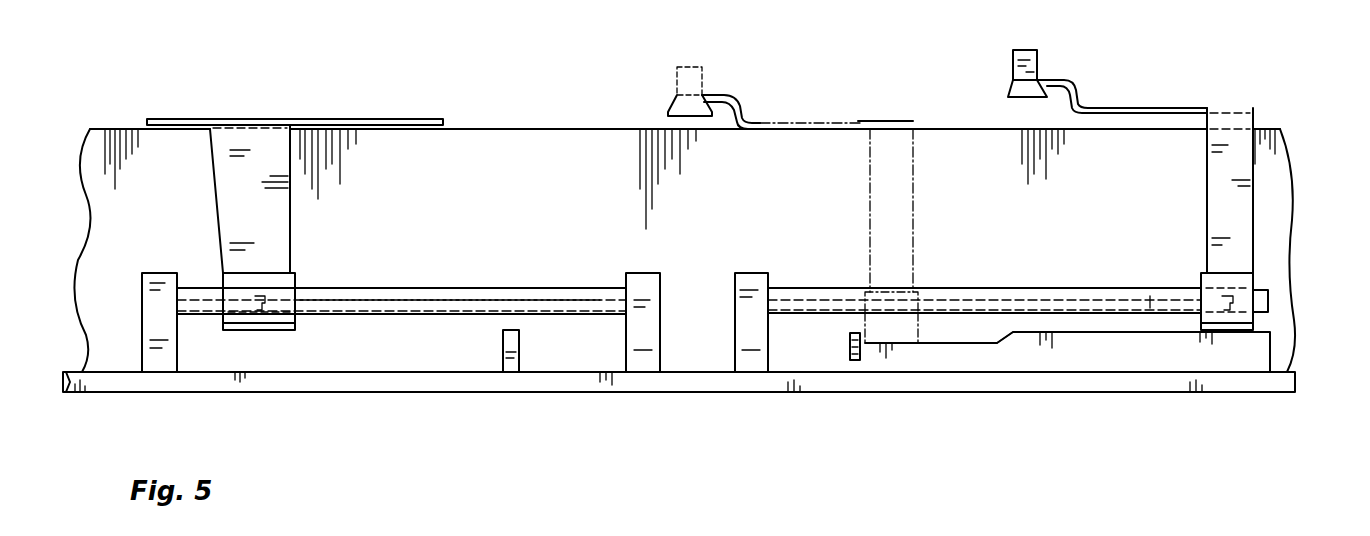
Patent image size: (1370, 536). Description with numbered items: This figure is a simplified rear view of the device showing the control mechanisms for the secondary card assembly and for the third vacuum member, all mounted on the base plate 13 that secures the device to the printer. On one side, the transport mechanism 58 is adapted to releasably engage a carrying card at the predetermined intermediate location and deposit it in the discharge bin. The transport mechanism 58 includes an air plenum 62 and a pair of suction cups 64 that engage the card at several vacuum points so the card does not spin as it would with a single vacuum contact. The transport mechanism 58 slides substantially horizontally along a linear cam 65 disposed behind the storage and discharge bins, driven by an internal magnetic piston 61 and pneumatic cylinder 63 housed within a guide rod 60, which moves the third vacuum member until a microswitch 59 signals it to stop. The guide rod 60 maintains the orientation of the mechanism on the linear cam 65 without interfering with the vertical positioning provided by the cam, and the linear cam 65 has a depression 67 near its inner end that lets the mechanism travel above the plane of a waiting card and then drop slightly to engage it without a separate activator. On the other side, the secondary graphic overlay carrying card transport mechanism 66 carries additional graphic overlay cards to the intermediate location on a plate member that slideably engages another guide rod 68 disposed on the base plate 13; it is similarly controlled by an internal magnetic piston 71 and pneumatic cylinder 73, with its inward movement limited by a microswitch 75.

The base plate 13 is at (1262, 380).
The transport mechanism 58 is at (1222, 58).
The microswitch 59 is at (850, 348).
The guide rod 60 is at (1003, 284).
The internal magnetic piston 61 is at (1224, 334).
The air plenum 62 is at (1040, 62).
The pneumatic cylinder 63 is at (1138, 305).
The suction cups 64 is at (1006, 98).
The linear cam 65 is at (1078, 353).
The secondary graphic overlay carrying card transport mechanism 66 is at (259, 120).
The depression 67 is at (956, 344).
The guide rod 68 is at (442, 286).
The internal magnetic piston 71 is at (255, 318).
The pneumatic cylinder 73 is at (410, 300).
The microswitch 75 is at (521, 345).